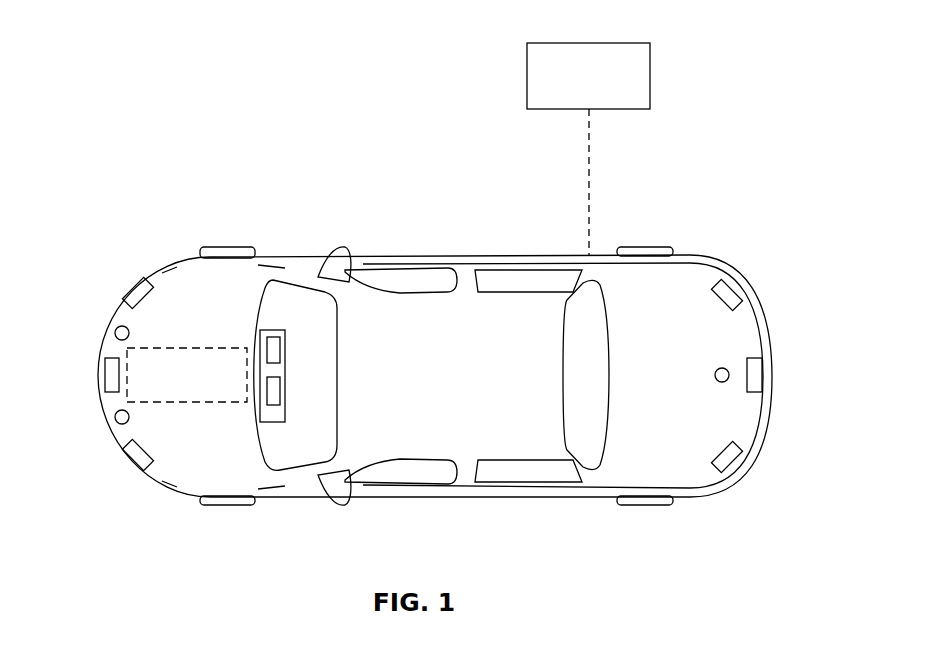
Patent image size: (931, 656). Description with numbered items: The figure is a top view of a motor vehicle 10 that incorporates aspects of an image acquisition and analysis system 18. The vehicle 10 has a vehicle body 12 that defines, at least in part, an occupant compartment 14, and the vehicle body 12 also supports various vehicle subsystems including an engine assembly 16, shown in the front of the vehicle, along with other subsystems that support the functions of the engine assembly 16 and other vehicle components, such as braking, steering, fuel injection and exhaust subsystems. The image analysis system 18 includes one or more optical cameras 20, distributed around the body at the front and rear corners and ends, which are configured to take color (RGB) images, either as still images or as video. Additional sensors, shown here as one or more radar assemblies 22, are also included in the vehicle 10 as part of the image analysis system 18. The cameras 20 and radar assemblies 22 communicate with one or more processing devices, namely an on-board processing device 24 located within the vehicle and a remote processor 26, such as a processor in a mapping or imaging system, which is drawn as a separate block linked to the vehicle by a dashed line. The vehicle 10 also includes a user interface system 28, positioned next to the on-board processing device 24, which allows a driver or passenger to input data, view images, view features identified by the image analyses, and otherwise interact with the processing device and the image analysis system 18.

The motor vehicle 10 is at (503, 256).
The vehicle body 12 is at (638, 272).
The occupant compartment 14 is at (518, 450).
The engine assembly 16 is at (223, 393).
The image acquisition and analysis system 18 is at (383, 201).
The optical cameras 20 is at (142, 295).
The radar assemblies 22 is at (115, 334).
The on-board processing device 24 is at (273, 353).
The remote processor 26 is at (612, 43).
The user interface system 28 is at (273, 388).